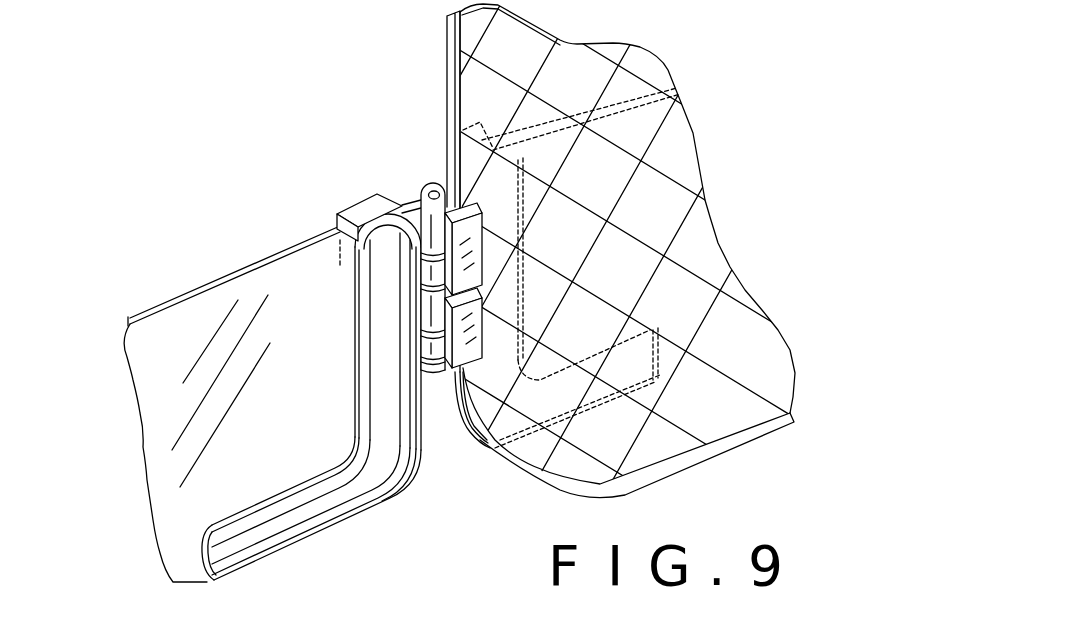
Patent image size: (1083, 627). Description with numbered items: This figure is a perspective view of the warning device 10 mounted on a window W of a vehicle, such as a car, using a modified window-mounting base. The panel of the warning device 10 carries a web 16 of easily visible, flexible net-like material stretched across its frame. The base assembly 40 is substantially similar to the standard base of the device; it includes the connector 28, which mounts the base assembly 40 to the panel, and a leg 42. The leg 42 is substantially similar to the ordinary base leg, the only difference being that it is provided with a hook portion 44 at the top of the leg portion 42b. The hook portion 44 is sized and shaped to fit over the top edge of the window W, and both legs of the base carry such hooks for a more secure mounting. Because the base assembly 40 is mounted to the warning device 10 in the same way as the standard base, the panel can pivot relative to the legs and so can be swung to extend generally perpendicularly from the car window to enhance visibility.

The warning device 10 is at (514, 313).
The web 16 is at (670, 62).
The connector 28 is at (438, 375).
The base assembly 40 is at (390, 172).
The leg 42 is at (311, 407).
The leg portion 42b is at (356, 392).
The hook portion 44 is at (355, 207).
The window W is at (256, 268).